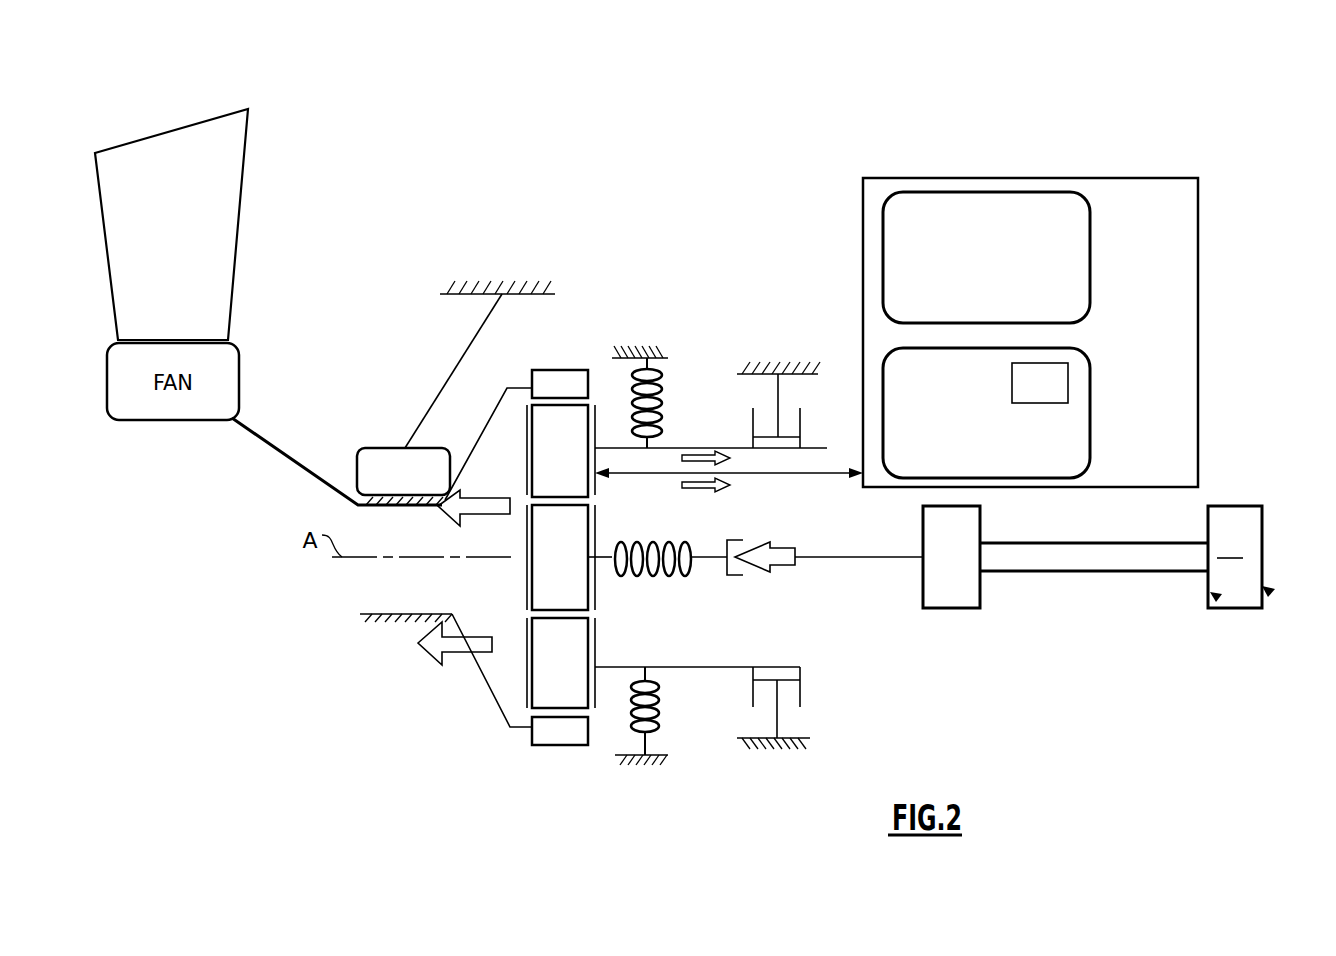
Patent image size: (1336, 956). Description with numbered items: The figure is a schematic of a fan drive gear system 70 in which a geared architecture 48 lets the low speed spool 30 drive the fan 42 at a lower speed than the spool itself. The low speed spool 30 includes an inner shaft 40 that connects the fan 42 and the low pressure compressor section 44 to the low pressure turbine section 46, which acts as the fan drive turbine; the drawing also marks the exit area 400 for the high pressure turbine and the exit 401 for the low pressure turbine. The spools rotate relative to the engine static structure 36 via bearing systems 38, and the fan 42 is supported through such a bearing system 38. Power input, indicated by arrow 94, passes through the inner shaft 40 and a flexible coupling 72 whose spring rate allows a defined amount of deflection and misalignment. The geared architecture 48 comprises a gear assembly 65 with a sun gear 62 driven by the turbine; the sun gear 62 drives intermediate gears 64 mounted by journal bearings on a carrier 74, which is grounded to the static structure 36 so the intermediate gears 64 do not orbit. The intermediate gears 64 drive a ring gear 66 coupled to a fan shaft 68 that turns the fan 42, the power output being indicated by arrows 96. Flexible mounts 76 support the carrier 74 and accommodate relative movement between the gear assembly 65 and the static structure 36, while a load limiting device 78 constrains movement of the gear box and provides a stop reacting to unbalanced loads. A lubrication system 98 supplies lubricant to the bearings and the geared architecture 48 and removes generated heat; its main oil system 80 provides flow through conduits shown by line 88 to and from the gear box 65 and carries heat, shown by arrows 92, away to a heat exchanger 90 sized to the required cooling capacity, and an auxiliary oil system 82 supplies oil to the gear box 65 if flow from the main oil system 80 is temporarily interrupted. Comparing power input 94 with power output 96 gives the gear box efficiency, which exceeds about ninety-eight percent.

The fan 42 is at (157, 232).
The bearing system 38 is at (375, 448).
The engine static structure 36 is at (540, 292).
The ring gear 66 is at (548, 370).
The intermediate gears 64 is at (575, 485).
The carrier 74 is at (597, 420).
The sun gear 62 is at (583, 598).
The gear assembly 65 is at (512, 752).
The fan shaft 68 is at (490, 697).
The power output arrows 96 is at (486, 502).
The flexible mounts 76 is at (662, 718).
The load limiting device 78 is at (785, 406).
The line 88 is at (792, 474).
The heat arrows 92 is at (697, 454).
The flexible coupling 72 is at (672, 545).
The power input arrow 94 is at (775, 553).
The inner shaft 40 is at (812, 558).
The low pressure compressor section 44 is at (960, 518).
The low speed spool 30 is at (1018, 556).
The low pressure turbine section 46 is at (1238, 507).
The exit area 400 is at (1216, 600).
The exit 401 is at (1268, 594).
The fan drive gear system 70 is at (1061, 300).
The lubrication system 98 is at (1177, 242).
The auxiliary oil system 82 is at (1082, 295).
The main oil system 80 is at (1080, 450).
The heat exchanger 90 is at (1053, 385).
The geared architecture 48 is at (355, 748).